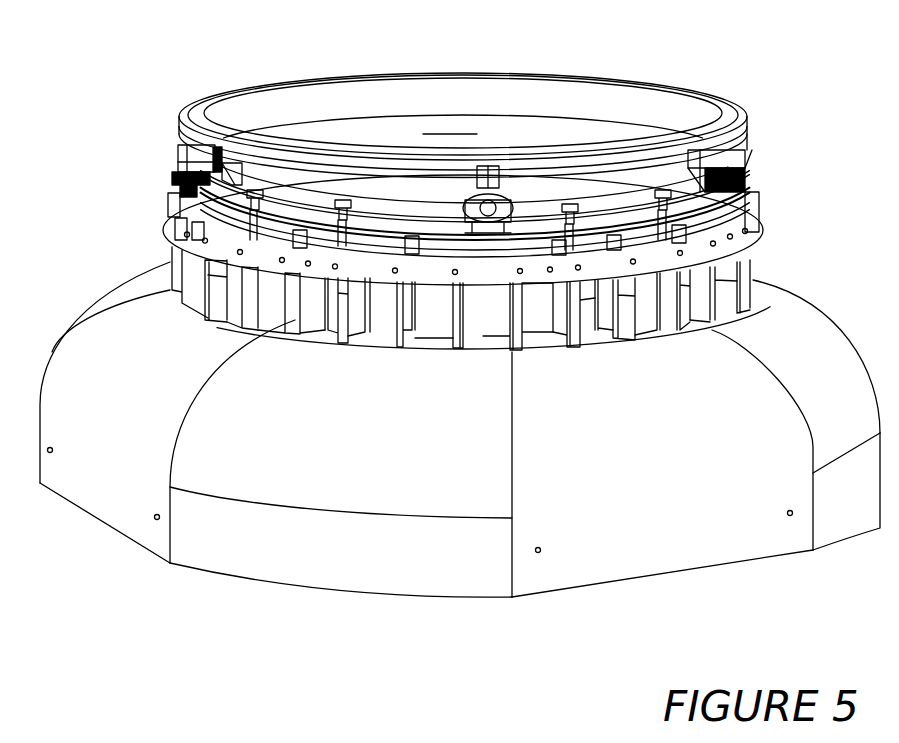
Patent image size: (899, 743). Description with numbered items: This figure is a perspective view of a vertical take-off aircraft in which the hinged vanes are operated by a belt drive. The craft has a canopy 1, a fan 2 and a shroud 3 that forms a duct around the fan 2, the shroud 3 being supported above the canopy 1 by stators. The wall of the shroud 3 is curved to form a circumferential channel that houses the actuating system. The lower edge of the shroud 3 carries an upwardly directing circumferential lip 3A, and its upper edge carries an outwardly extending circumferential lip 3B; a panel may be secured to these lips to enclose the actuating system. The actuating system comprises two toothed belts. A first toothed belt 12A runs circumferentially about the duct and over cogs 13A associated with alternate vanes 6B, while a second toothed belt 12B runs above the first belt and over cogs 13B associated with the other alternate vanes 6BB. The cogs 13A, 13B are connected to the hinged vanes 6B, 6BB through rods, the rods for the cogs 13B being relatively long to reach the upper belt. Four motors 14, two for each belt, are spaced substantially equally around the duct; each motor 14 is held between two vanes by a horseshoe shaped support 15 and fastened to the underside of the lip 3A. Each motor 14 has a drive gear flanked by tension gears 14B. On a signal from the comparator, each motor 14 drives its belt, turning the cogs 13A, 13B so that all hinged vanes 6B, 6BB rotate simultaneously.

The canopy 1 is at (67, 365).
The fan 2 is at (485, 125).
The shroud 3 is at (380, 97).
The circumferential lip 3A is at (175, 240).
The circumferential lip 3B is at (182, 127).
The hinged vane 6B is at (293, 327).
The hinged vane 6BB is at (240, 322).
The first toothed belt 12A is at (712, 217).
The second toothed belt 12B is at (170, 205).
The cog 13A is at (623, 233).
The cog 13B is at (245, 100).
The motor 14 is at (180, 158).
The tension gear 14B is at (503, 213).
The horseshoe shaped support 15 is at (172, 179).